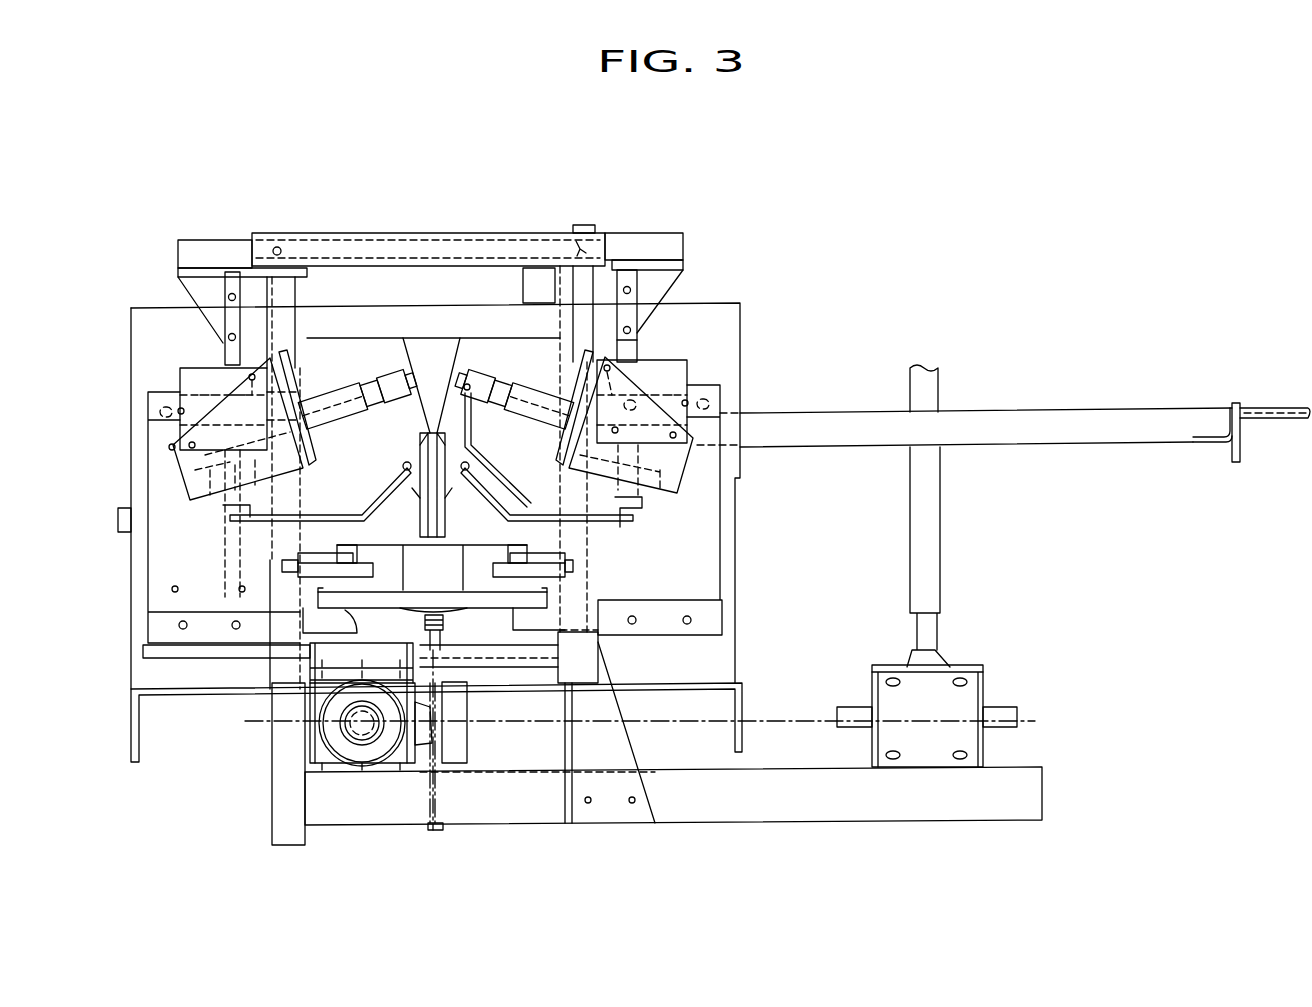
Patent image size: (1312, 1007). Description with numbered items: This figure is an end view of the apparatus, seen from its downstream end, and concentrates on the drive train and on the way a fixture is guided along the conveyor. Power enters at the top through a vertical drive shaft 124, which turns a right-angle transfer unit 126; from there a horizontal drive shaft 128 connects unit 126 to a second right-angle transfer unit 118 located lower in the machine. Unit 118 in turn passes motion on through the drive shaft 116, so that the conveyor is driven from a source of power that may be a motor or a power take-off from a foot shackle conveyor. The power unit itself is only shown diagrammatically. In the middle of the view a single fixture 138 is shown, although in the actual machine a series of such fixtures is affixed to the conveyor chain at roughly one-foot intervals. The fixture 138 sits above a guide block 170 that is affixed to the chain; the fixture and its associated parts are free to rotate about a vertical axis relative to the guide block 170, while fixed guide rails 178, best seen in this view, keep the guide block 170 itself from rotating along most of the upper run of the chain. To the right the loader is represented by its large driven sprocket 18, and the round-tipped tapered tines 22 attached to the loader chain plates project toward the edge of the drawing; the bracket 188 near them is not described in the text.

The drive shaft 116 is at (467, 330).
The fixture 138 is at (420, 452).
The guide rails 178 is at (552, 598).
The guide block 170 is at (487, 603).
The right-angle transfer unit 118 is at (373, 768).
The vertical drive shaft 124 is at (938, 508).
The driven sprocket 18 is at (1058, 410).
The end bracket 188 is at (1108, 448).
The tapered tines 22 is at (1270, 408).
The right-angle transfer unit 126 is at (985, 680).
The horizontal drive shaft 128 is at (805, 712).